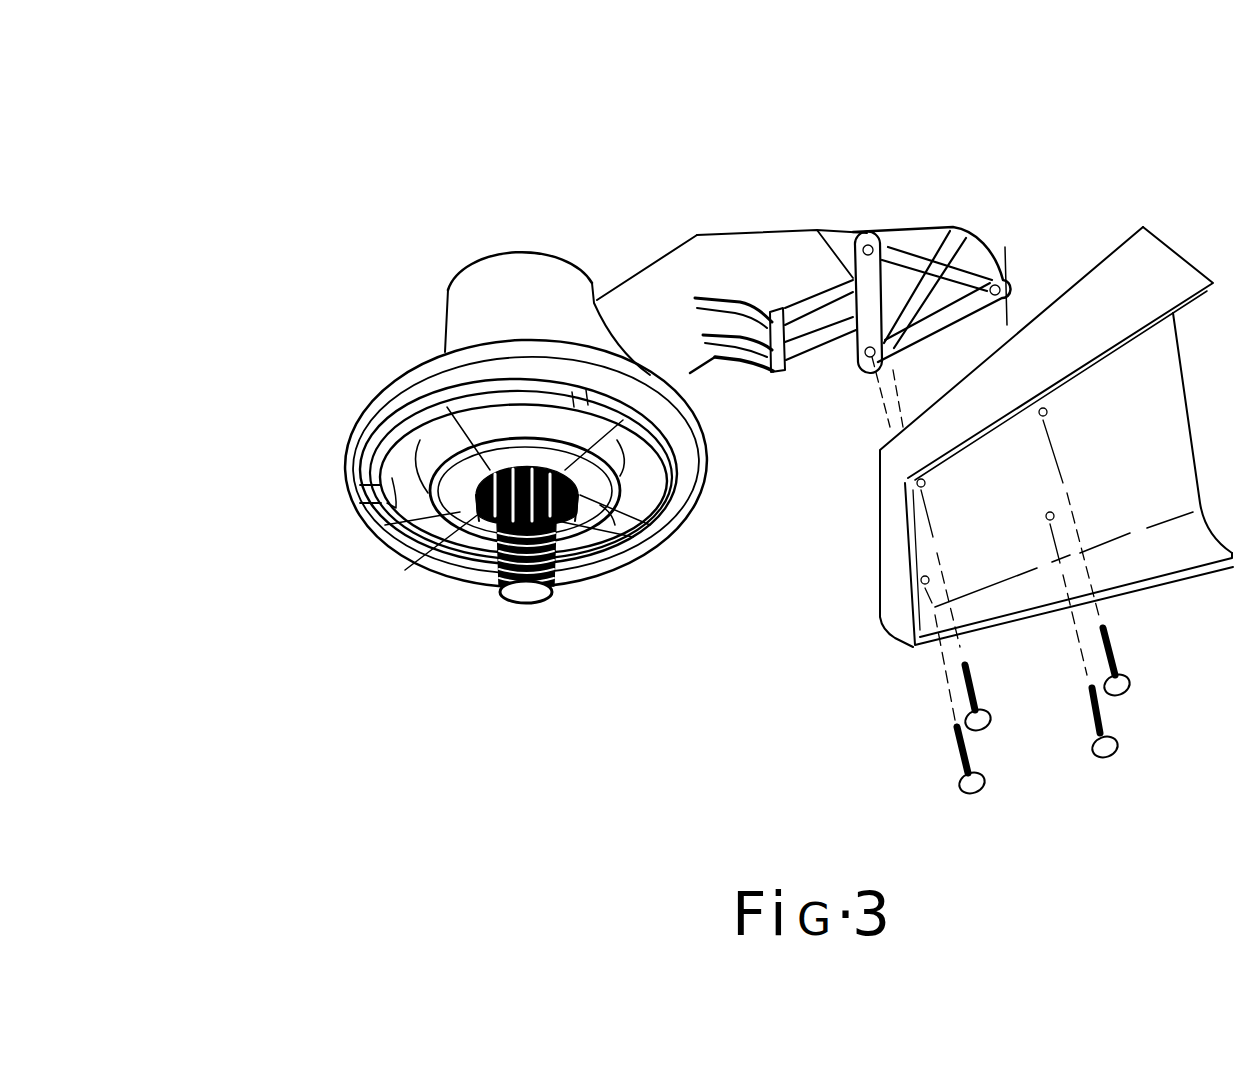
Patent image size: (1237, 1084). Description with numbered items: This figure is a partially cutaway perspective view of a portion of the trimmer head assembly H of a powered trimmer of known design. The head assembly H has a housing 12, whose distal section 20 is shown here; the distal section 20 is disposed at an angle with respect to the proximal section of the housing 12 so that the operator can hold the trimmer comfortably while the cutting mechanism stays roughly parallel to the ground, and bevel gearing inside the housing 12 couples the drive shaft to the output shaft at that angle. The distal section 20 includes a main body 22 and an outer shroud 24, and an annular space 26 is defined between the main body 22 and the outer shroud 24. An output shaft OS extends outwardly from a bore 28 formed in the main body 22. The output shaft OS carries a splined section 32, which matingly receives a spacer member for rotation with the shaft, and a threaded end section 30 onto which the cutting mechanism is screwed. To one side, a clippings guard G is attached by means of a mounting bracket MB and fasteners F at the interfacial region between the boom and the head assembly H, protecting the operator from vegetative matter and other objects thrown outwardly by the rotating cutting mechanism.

The trimmer head assembly H is at (248, 243).
The distal section 20 is at (447, 303).
The housing 12 is at (627, 278).
The main body 22 is at (460, 450).
The outer shroud 24 is at (353, 448).
The annular space 26 is at (377, 532).
The bore 28 is at (607, 525).
The splined section 32 is at (477, 503).
The threaded end section 30 is at (497, 597).
The output shaft OS is at (575, 538).
The mounting bracket MB is at (917, 225).
The clippings guard G is at (1093, 268).
The fasteners F is at (1127, 685).